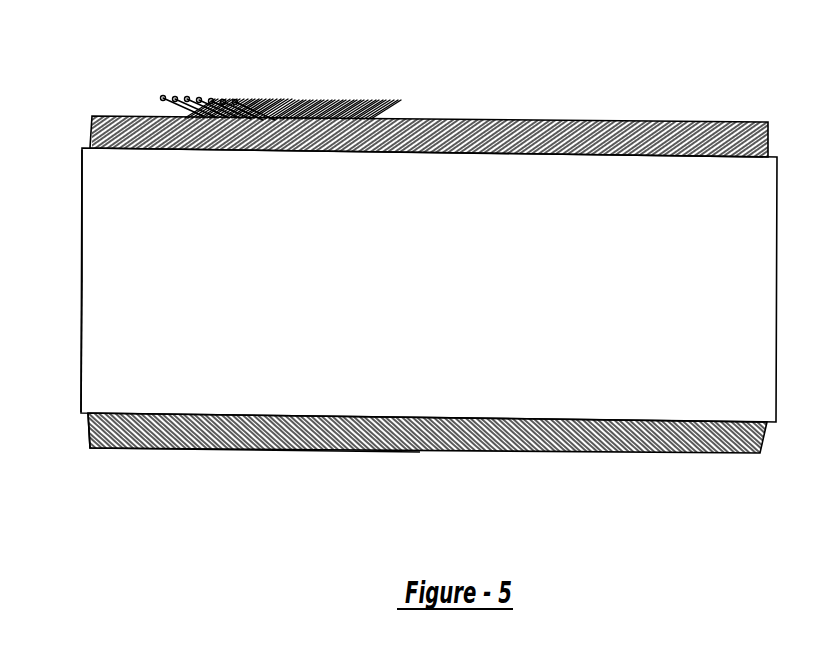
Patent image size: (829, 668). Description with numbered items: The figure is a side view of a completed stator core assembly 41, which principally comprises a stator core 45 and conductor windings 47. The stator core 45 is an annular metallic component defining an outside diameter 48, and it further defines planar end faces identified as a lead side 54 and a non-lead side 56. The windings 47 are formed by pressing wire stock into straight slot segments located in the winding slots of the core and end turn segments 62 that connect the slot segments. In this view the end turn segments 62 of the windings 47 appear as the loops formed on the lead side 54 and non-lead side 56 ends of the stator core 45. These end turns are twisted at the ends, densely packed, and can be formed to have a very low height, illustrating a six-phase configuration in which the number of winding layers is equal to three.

The stator core assembly 41 is at (80, 367).
The stator core 45 is at (81, 307).
The outside diameter 48 is at (81, 198).
The lead side 54 is at (508, 150).
The non-lead side 56 is at (583, 423).
The conductor windings 47 is at (245, 450).
The end turn segments 62 is at (613, 122).